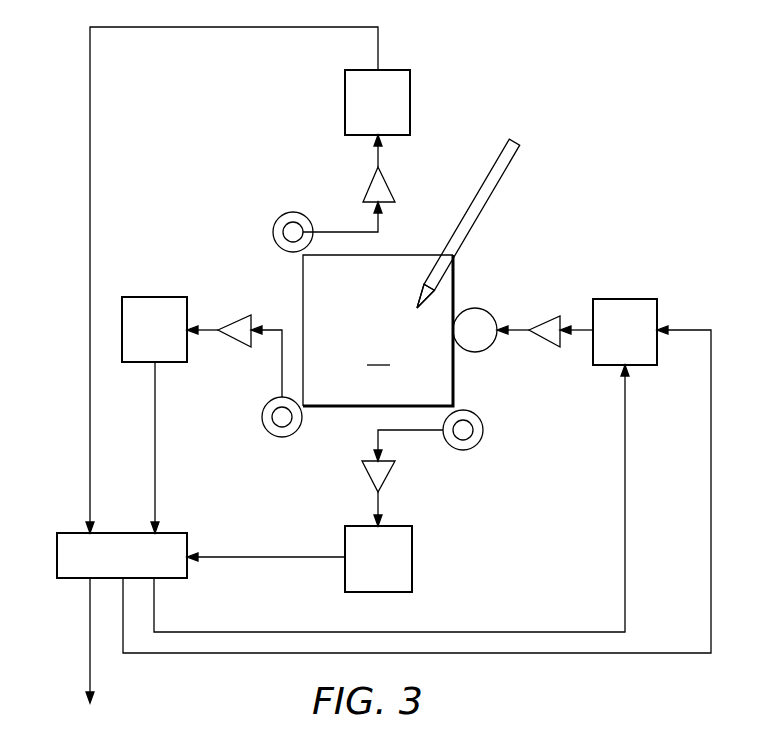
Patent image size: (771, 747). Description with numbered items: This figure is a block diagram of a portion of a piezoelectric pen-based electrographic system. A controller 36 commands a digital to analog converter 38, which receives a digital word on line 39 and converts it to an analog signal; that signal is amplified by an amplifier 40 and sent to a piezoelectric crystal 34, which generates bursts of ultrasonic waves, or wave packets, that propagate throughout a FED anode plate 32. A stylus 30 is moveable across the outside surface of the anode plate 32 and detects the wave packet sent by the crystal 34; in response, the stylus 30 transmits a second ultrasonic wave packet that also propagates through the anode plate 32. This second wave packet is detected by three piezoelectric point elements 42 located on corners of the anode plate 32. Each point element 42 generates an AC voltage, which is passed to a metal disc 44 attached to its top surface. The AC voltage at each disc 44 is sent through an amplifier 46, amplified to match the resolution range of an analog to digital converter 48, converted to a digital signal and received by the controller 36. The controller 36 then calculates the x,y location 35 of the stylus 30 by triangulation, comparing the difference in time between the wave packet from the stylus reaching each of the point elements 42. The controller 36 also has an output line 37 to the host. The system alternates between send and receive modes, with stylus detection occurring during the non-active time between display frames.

The stylus 30 is at (470, 210).
The FED anode plate 32 is at (378, 330).
The piezoelectric crystal 34 is at (483, 310).
The x,y location 35 is at (413, 306).
The controller 36 is at (172, 533).
The host output line 37 is at (88, 680).
The digital to analog converter 38 is at (622, 299).
The line 39 is at (683, 330).
The amplifier 40 is at (545, 345).
The point elements 42 is at (275, 240).
The metal discs 44 is at (282, 222).
The amplifiers 46 is at (362, 180).
The analog to digital converters 48 is at (410, 100).